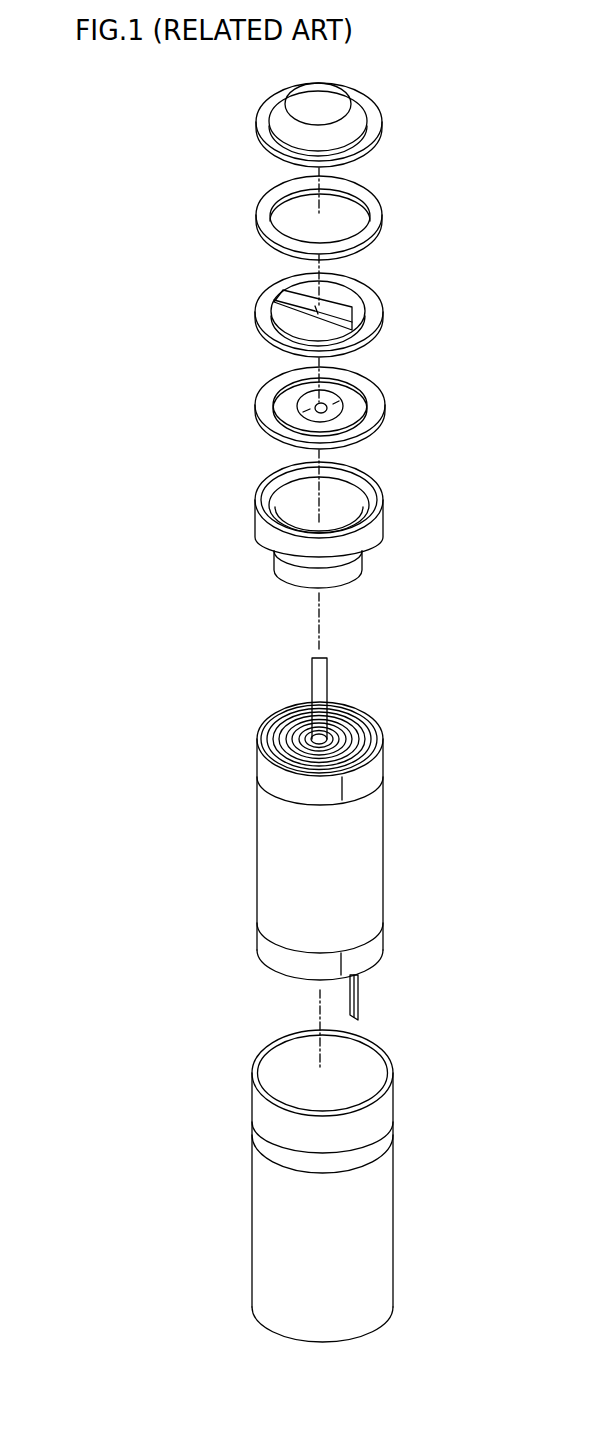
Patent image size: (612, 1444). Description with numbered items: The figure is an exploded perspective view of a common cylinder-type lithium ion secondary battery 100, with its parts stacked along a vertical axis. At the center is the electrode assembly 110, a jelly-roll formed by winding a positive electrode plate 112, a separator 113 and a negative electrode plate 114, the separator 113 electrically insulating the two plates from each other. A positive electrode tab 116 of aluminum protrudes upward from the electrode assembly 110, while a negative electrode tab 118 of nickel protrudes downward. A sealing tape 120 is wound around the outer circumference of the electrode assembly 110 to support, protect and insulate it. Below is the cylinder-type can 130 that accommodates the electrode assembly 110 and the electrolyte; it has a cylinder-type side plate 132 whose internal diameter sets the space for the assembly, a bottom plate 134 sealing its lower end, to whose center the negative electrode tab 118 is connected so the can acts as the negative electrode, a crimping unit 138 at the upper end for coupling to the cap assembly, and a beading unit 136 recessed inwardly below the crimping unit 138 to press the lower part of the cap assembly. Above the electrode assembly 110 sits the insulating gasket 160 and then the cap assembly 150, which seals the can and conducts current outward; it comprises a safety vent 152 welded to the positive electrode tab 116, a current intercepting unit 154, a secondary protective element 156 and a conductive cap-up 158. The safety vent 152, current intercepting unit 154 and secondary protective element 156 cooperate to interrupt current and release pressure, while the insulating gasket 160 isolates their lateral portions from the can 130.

The cylinder-type lithium ion secondary battery 100 is at (79, 87).
The electrode assembly 110 is at (205, 680).
The positive electrode plate 112 is at (378, 747).
The separator 113 is at (383, 735).
The negative electrode plate 114 is at (368, 727).
The positive electrode tab 116 is at (322, 660).
The negative electrode tab 118 is at (360, 997).
The sealing tape 120 is at (368, 842).
The cylinder-type can 130 is at (167, 1095).
The cylinder-type side plate 132 is at (260, 1205).
The bottom plate 134 is at (262, 1330).
The beading unit 136 is at (260, 1137).
The crimping unit 138 is at (260, 1100).
The cap assembly 150 is at (178, 115).
The safety vent 152 is at (262, 406).
The current intercepting unit 154 is at (262, 312).
The secondary protective element 156 is at (262, 216).
The cap-up 158 is at (262, 121).
The insulating gasket 160 is at (262, 527).